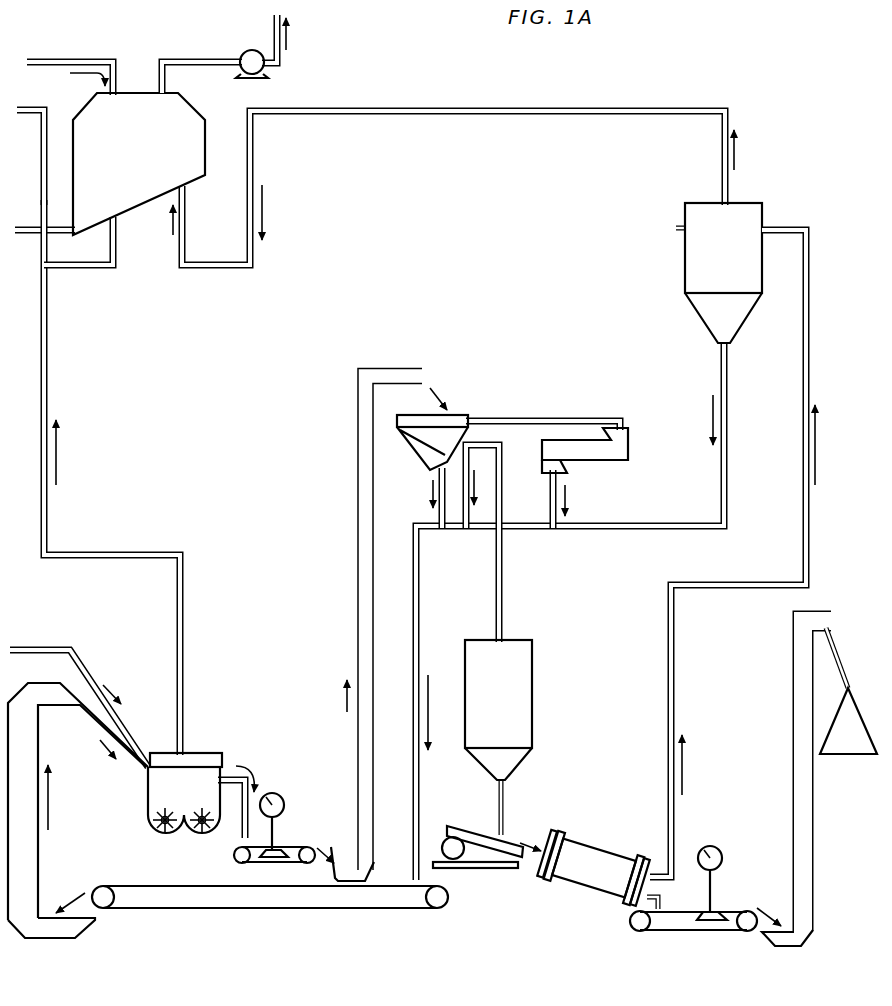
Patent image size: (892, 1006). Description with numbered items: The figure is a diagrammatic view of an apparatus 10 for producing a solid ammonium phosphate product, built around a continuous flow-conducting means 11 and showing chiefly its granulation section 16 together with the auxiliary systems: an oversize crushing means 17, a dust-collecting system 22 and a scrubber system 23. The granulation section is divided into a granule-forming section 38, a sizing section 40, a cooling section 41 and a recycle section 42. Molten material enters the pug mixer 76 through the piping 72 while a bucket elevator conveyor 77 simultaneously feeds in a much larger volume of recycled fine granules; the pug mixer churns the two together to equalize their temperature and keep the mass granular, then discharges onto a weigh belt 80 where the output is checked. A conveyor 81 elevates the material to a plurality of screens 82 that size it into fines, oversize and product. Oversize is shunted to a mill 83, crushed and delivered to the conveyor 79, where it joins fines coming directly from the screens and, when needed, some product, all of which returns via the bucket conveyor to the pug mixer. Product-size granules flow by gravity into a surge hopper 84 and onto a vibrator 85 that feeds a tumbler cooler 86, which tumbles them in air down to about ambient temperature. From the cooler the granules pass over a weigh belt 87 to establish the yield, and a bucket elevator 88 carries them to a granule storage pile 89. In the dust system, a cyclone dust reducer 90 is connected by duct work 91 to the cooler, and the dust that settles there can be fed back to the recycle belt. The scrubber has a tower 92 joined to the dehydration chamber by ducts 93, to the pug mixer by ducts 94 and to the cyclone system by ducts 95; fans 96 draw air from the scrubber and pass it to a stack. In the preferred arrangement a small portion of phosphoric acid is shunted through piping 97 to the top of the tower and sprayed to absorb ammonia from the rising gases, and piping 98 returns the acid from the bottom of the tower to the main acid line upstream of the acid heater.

The apparatus 10 is at (821, 58).
The continuous flow-conducting means 11 is at (278, 431).
The granulation section 16 is at (353, 521).
The oversize crushing means 17 is at (637, 415).
The dust-collecting system 22 is at (783, 181).
The scrubber system 23 is at (153, 33).
The granule-forming section 38 is at (230, 744).
The sizing section 40 is at (442, 366).
The cooling section 41 is at (606, 841).
The recycle section 42 is at (266, 944).
The piping 72 is at (54, 648).
The pug mixer 76 is at (162, 788).
The bucket elevator conveyor 77 is at (23, 853).
The conveyor 79 is at (344, 899).
The weigh belt 80 is at (292, 842).
The conveyor 81 is at (357, 582).
The screens 82 is at (455, 422).
The mill 83 is at (615, 452).
The surge hopper 84 is at (523, 682).
The vibrator 85 is at (480, 858).
The tumbler cooler 86 is at (597, 870).
The weigh belt 87 is at (685, 922).
The bucket elevator 88 is at (793, 818).
The granule storage pile 89 is at (855, 728).
The cyclone dust reducer 90 is at (700, 243).
The duct work 91 is at (813, 305).
The tower 92 is at (124, 179).
The ducts 93 is at (33, 115).
The ducts 94 is at (47, 338).
The ducts 95 is at (530, 108).
The fans 96 is at (262, 73).
The piping 97 is at (60, 59).
The piping 98 is at (58, 228).